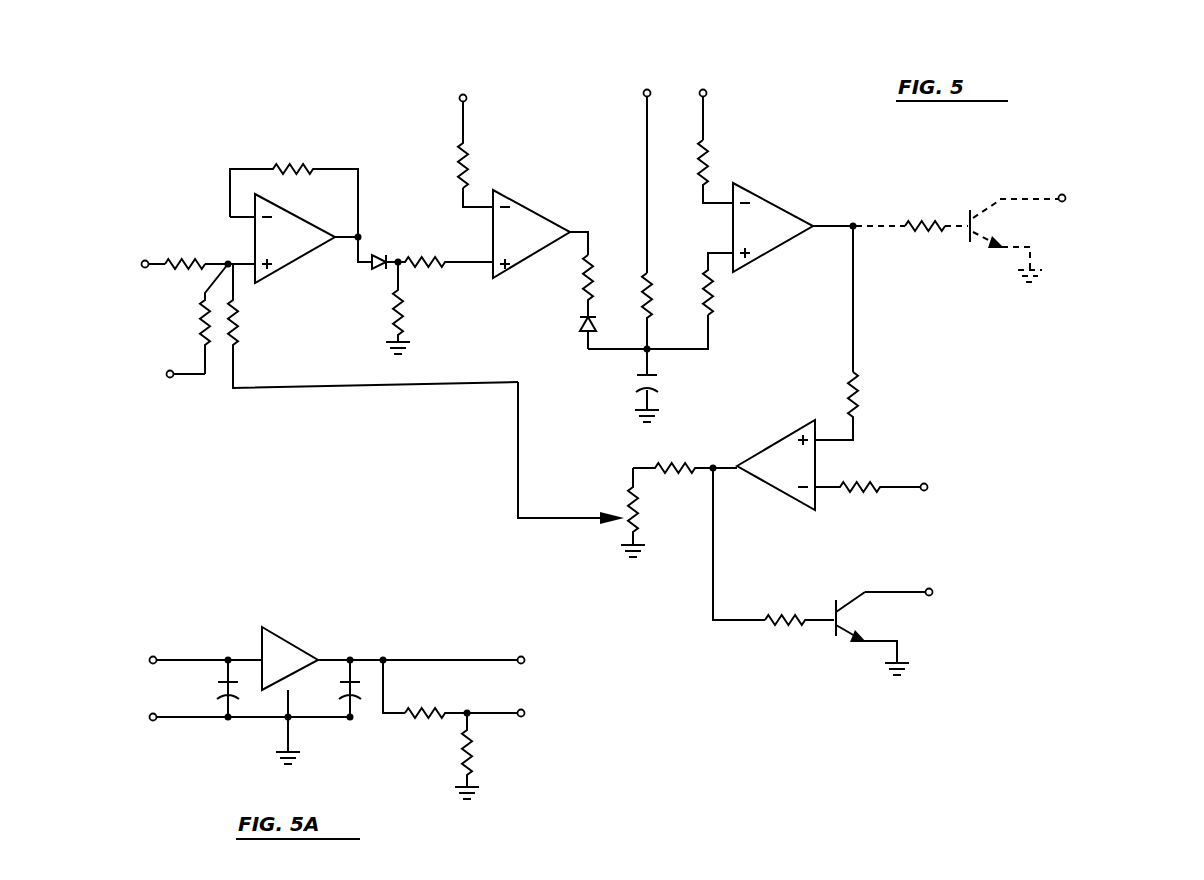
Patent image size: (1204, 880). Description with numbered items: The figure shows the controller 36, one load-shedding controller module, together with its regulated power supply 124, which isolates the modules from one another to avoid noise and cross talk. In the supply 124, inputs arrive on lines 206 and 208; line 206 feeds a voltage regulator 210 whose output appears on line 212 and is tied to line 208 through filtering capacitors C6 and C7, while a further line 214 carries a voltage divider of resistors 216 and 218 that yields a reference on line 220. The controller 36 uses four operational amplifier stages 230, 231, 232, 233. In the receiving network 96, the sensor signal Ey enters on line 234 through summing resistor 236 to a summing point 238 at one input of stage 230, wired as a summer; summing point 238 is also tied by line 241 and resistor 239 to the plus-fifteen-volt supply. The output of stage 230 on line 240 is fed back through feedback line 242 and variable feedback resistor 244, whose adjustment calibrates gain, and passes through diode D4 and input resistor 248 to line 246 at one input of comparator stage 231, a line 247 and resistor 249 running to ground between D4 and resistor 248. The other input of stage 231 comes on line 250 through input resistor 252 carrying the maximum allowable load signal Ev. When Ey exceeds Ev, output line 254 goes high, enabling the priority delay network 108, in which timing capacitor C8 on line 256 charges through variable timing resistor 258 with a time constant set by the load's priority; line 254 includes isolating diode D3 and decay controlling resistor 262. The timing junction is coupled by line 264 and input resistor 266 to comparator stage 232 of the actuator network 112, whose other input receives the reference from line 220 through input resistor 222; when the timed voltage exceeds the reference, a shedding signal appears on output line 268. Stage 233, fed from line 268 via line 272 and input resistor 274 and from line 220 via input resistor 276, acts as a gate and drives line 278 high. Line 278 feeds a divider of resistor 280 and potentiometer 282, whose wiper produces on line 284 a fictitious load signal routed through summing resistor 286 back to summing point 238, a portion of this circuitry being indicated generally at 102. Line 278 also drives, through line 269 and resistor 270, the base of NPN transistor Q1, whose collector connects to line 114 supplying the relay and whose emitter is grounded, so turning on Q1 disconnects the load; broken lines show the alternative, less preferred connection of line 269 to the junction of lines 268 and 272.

In FIG. 5, the controller 36 is at (782, 112).
In FIG. 5, the receiving network 96 is at (413, 150).
In FIG. 5, the reference level setting circuit 102 is at (613, 456).
In FIG. 5, the priority delay network 108 is at (724, 356).
In FIG. 5, the actuator network 112 is at (905, 432).
In FIG. 5, the line supplying the relay 114 is at (892, 590).
In FIG. 5A, the regulated power supply 124 is at (468, 580).
In FIG. 5A, the input line 206 is at (183, 658).
In FIG. 5A, the input line 208 is at (196, 720).
In FIG. 5A, the voltage regulator 210 is at (293, 640).
In FIG. 5, the output line 212 is at (645, 120).
In FIG. 5A, the output line 212 is at (440, 655).
In FIG. 5A, the additional line 214 is at (388, 684).
In FIG. 5A, the resistor 216 is at (425, 712).
In FIG. 5A, the resistor 218 is at (472, 750).
In FIG. 5, the reference output line 220 is at (905, 490).
In FIG. 5A, the reference output line 220 is at (495, 712).
In FIG. 5, the input resistor 222 is at (711, 170).
In FIG. 5, the summer stage 230 is at (284, 273).
In FIG. 5, the comparator stage 231 is at (541, 212).
In FIG. 5, the comparator stage 232 is at (778, 208).
In FIG. 5, the comparator stage 233 is at (775, 490).
In FIG. 5, the first input line 234 is at (157, 262).
In FIG. 5, the summing resistor 236 is at (188, 272).
In FIG. 5, the summing point 238 is at (233, 262).
In FIG. 5, the resistor 239 is at (205, 318).
In FIG. 5, the output line 240 is at (345, 244).
In FIG. 5, the line 241 is at (189, 373).
In FIG. 5, the feedback line 242 is at (360, 196).
In FIG. 5, the variable feedback resistor 244 is at (293, 166).
In FIG. 5, the line 246 is at (372, 254).
In FIG. 5, the ground line 247 is at (402, 296).
In FIG. 5, the input resistor 248 is at (428, 268).
In FIG. 5, the resistor 249 is at (407, 333).
In FIG. 5, the line 250 is at (471, 192).
In FIG. 5, the input resistor 252 is at (470, 158).
In FIG. 5, the output line 254 is at (587, 227).
In FIG. 5, the line 256 is at (647, 362).
In FIG. 5, the variable timing resistor 258 is at (650, 285).
In FIG. 5, the decay controlling resistor 262 is at (596, 275).
In FIG. 5, the line 264 is at (712, 333).
In FIG. 5, the input resistor 266 is at (713, 296).
In FIG. 5, the output line 268 is at (847, 222).
In FIG. 5, the line 269 is at (716, 552).
In FIG. 5, the resistor 270 is at (785, 614).
In FIG. 5, the line 272 is at (856, 324).
In FIG. 5, the input resistor 274 is at (860, 392).
In FIG. 5, the input resistor 276 is at (853, 485).
In FIG. 5, the output line 278 is at (722, 462).
In FIG. 5, the resistor 280 is at (668, 465).
In FIG. 5, the potentiometer 282 is at (640, 516).
In FIG. 5, the line 284 is at (548, 517).
In FIG. 5, the summing resistor 286 is at (236, 334).
In FIG. 5, the isolating diode D3 is at (580, 325).
In FIG. 5, the diode D4 is at (385, 272).
In FIG. 5A, the filtering capacitor C6 is at (218, 688).
In FIG. 5A, the filtering capacitor C7 is at (340, 688).
In FIG. 5, the timing capacitor C8 is at (658, 381).
In FIG. 5, the NPN transistor Q1 is at (848, 618).